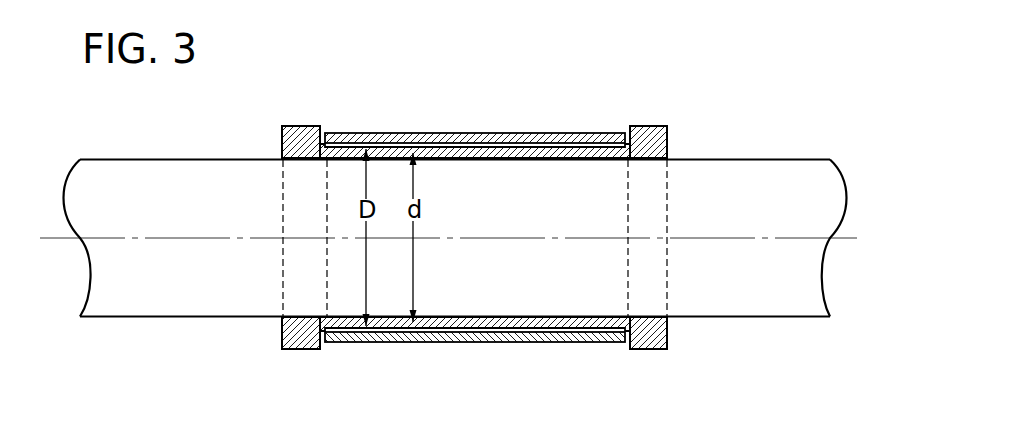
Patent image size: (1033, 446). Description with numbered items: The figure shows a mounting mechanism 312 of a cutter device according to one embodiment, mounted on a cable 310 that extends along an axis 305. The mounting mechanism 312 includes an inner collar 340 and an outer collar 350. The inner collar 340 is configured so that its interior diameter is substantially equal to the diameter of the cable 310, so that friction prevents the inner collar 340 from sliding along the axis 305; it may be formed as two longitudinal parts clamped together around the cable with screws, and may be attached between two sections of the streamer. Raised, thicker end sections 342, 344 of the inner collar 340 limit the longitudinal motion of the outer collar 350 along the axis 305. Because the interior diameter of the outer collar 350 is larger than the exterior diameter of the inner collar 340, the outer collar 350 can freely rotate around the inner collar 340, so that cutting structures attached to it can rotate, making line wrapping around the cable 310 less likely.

The axis 305 is at (128, 238).
The cable 310 is at (725, 160).
The mounting mechanism 312 is at (485, 90).
The inner collar 340 is at (511, 325).
The raised end section 342 is at (300, 350).
The raised end section 344 is at (653, 350).
The outer collar 350 is at (548, 133).